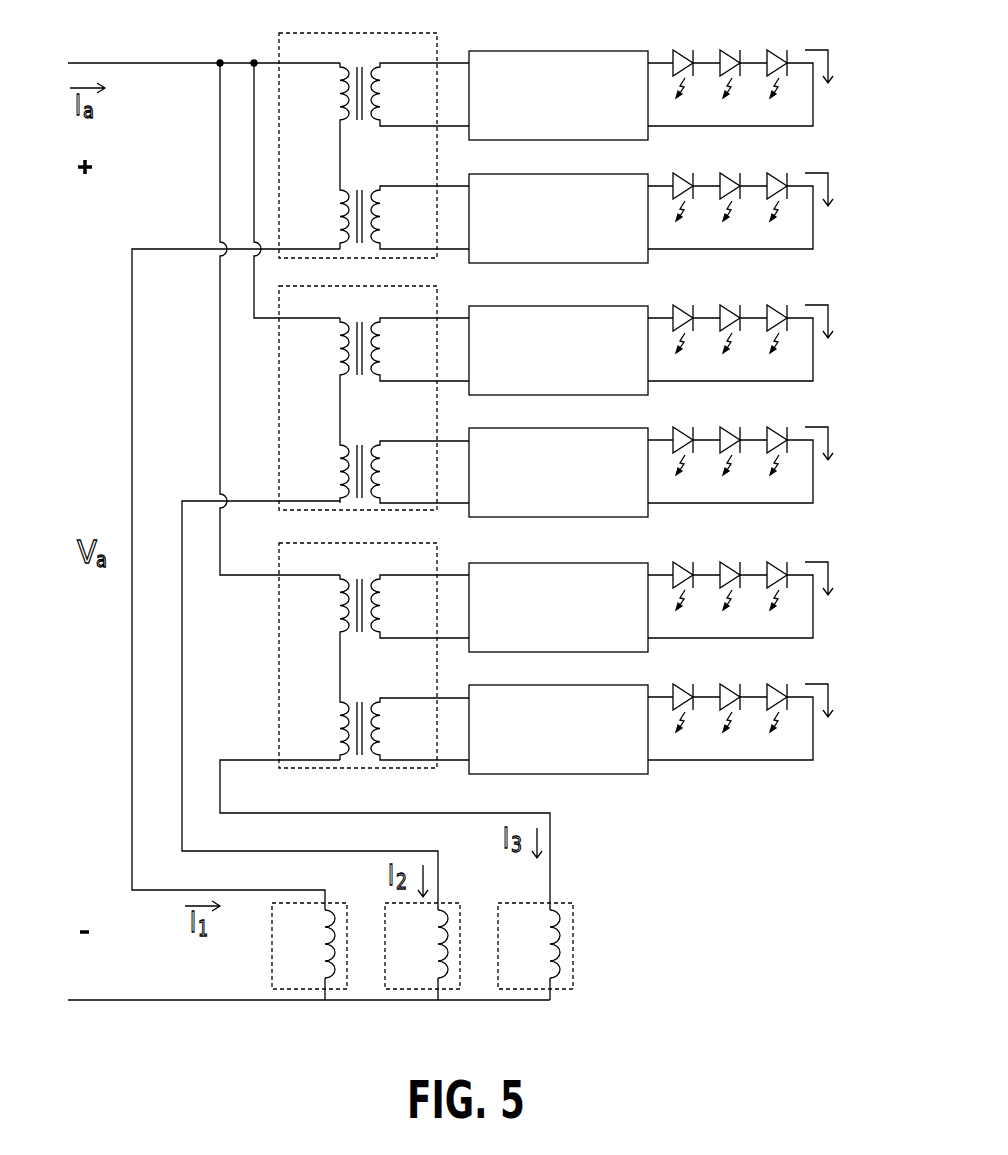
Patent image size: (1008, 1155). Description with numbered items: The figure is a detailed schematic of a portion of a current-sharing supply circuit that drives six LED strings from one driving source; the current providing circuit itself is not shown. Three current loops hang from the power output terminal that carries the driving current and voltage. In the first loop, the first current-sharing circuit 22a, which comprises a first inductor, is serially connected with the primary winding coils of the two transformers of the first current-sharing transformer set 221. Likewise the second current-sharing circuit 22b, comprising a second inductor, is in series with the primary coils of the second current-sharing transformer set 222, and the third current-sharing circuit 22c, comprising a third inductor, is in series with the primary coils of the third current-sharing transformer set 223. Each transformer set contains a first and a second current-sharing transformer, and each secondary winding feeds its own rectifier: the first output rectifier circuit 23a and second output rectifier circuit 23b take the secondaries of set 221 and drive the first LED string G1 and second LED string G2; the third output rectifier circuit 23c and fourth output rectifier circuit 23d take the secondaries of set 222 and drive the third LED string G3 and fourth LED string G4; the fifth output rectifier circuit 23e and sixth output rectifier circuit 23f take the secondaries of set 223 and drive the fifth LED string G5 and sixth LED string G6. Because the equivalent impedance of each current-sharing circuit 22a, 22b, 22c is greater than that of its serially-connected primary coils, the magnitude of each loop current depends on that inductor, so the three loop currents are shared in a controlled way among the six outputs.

The first current-sharing transformer set 221 is at (358, 33).
The second current-sharing transformer set 222 is at (278, 360).
The third current-sharing transformer set 223 is at (279, 663).
The first output rectifier circuit 23a is at (568, 50).
The second output rectifier circuit 23b is at (568, 173).
The third output rectifier circuit 23c is at (568, 305).
The fourth output rectifier circuit 23d is at (568, 427).
The fifth output rectifier circuit 23e is at (568, 562).
The sixth output rectifier circuit 23f is at (568, 684).
The first current-sharing circuit 22a is at (272, 962).
The second current-sharing circuit 22b is at (460, 927).
The third current-sharing circuit 22c is at (573, 945).
The first LED string G1 is at (705, 45).
The second LED string G2 is at (758, 194).
The third LED string G3 is at (758, 326).
The fourth LED string G4 is at (758, 448).
The fifth LED string G5 is at (758, 583).
The sixth LED string G6 is at (758, 705).